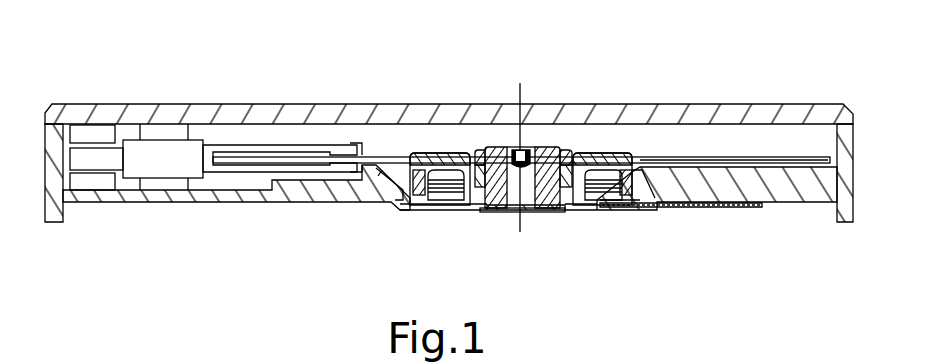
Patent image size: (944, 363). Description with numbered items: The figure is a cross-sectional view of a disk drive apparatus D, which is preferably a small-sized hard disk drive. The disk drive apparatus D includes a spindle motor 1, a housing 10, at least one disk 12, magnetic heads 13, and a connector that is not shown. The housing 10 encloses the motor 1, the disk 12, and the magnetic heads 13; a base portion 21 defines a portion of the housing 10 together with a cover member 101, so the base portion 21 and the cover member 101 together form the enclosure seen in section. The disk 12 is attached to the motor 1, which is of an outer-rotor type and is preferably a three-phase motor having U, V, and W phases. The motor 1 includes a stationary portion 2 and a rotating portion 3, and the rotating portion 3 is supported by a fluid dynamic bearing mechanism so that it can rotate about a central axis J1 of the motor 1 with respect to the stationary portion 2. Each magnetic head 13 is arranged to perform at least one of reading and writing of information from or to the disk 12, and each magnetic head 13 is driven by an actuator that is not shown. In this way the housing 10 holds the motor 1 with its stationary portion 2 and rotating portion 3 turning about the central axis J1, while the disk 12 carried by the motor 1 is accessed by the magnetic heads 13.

The disk drive apparatus D is at (134, 84).
The spindle motor 1 is at (460, 144).
The stationary portion 2 is at (443, 218).
The rotating portion 3 is at (590, 142).
The housing 10 is at (147, 212).
The disk 12 is at (753, 158).
The magnetic head 13 is at (232, 132).
The base portion 21 is at (571, 206).
The cover member 101 is at (665, 117).
The central axis J1 is at (519, 92).